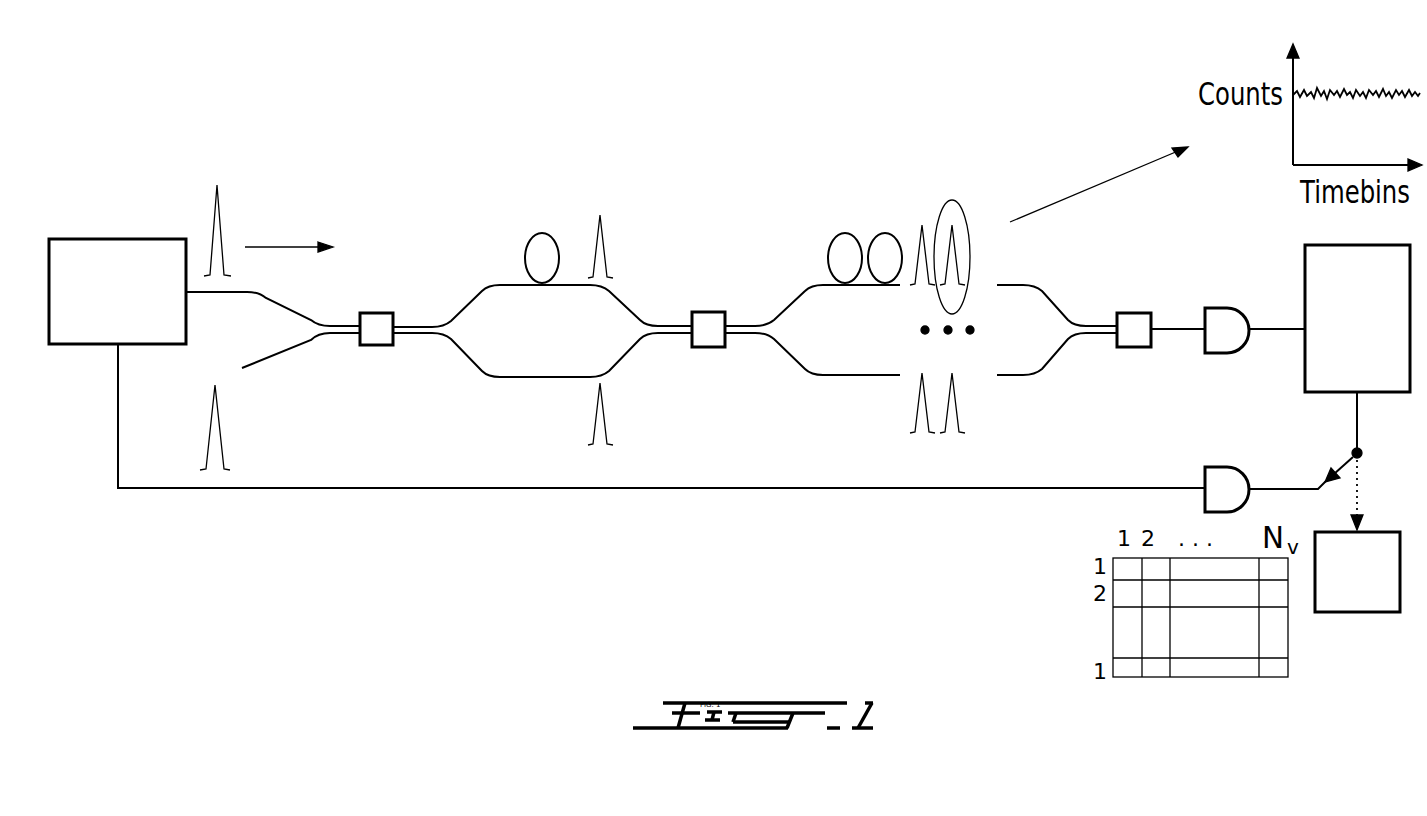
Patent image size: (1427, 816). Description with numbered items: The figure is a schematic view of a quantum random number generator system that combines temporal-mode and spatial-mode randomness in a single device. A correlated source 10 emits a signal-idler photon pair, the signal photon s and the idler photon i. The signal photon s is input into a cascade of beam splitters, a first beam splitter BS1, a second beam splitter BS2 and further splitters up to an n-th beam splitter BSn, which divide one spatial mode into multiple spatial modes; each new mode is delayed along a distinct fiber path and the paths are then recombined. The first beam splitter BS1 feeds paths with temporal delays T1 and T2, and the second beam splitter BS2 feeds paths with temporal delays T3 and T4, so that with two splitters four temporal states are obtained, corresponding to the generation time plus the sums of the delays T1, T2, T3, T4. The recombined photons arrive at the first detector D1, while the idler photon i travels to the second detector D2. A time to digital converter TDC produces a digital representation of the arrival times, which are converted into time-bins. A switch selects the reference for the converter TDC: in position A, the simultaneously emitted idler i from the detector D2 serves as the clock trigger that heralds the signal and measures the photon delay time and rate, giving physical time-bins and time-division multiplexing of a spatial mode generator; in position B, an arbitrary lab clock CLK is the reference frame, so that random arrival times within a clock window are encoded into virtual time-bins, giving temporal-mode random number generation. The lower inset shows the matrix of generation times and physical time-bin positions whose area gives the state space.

The source 10 is at (90, 238).
The signal photon s is at (190, 230).
The idler photon i is at (661, 416).
The first beam splitter BS1 is at (376, 310).
The second beam splitter BS2 is at (708, 311).
The n-th beam splitter BSn is at (1133, 311).
The first temporal delay T1 is at (537, 259).
The second temporal delay T2 is at (537, 406).
The third temporal delay T3 is at (844, 259).
The fourth temporal delay T4 is at (843, 405).
The first detector D1 is at (1226, 314).
The second detector D2 is at (1226, 473).
The time to digital converter TDC is at (1357, 318).
The arbitrary lab clock CLK is at (1357, 572).
The switch position A is at (1301, 469).
The switch position B is at (1368, 495).